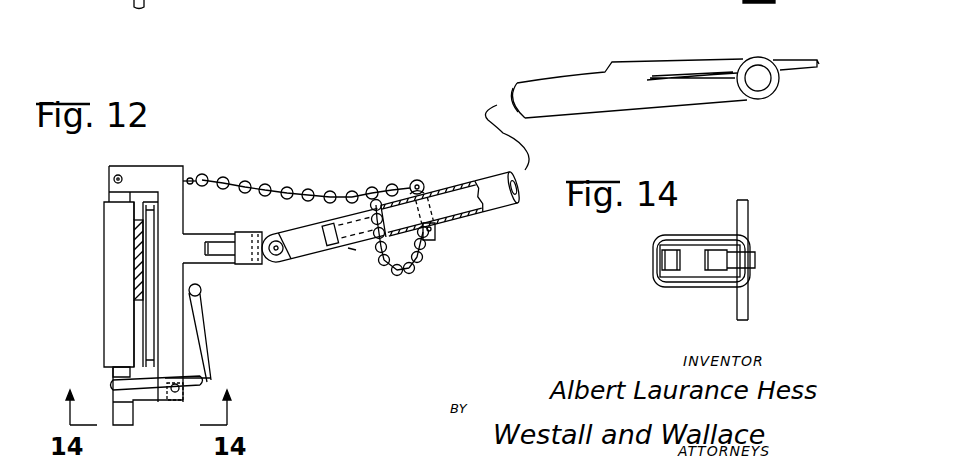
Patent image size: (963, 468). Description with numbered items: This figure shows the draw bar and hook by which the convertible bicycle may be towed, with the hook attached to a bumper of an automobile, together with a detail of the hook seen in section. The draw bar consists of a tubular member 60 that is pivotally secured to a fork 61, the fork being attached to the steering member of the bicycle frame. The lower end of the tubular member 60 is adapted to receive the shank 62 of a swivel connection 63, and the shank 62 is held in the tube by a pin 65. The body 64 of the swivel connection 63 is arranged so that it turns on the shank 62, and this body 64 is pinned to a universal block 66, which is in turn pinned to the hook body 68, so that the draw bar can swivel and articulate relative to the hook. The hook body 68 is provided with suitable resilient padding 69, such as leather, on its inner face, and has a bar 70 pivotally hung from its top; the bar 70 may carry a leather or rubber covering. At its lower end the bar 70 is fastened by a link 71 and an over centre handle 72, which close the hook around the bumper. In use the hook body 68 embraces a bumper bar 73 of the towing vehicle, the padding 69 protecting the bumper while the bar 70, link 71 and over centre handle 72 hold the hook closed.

In FIG. 12, the tubular member 60 is at (557, 108).
In FIG. 12, the fork 61 is at (773, 58).
In FIG. 12, the shank 62 is at (455, 208).
In FIG. 12, the swivel connection 63 is at (352, 252).
In FIG. 12, the body 64 is at (313, 261).
In FIG. 12, the pin 65 is at (432, 240).
In FIG. 12, the universal block 66 is at (260, 268).
In FIG. 12, the hook body 68 is at (160, 165).
In FIG. 14, the hook body 68 is at (713, 222).
In FIG. 12, the resilient padding 69 is at (147, 332).
In FIG. 12, the bar 70 is at (115, 270).
In FIG. 14, the bar 70 is at (660, 260).
In FIG. 12, the link 71 is at (158, 400).
In FIG. 14, the link 71 is at (682, 283).
In FIG. 12, the over centre handle 72 is at (200, 350).
In FIG. 14, the over centre handle 72 is at (753, 257).
In FIG. 12, the bumper bar 73 is at (133, 253).